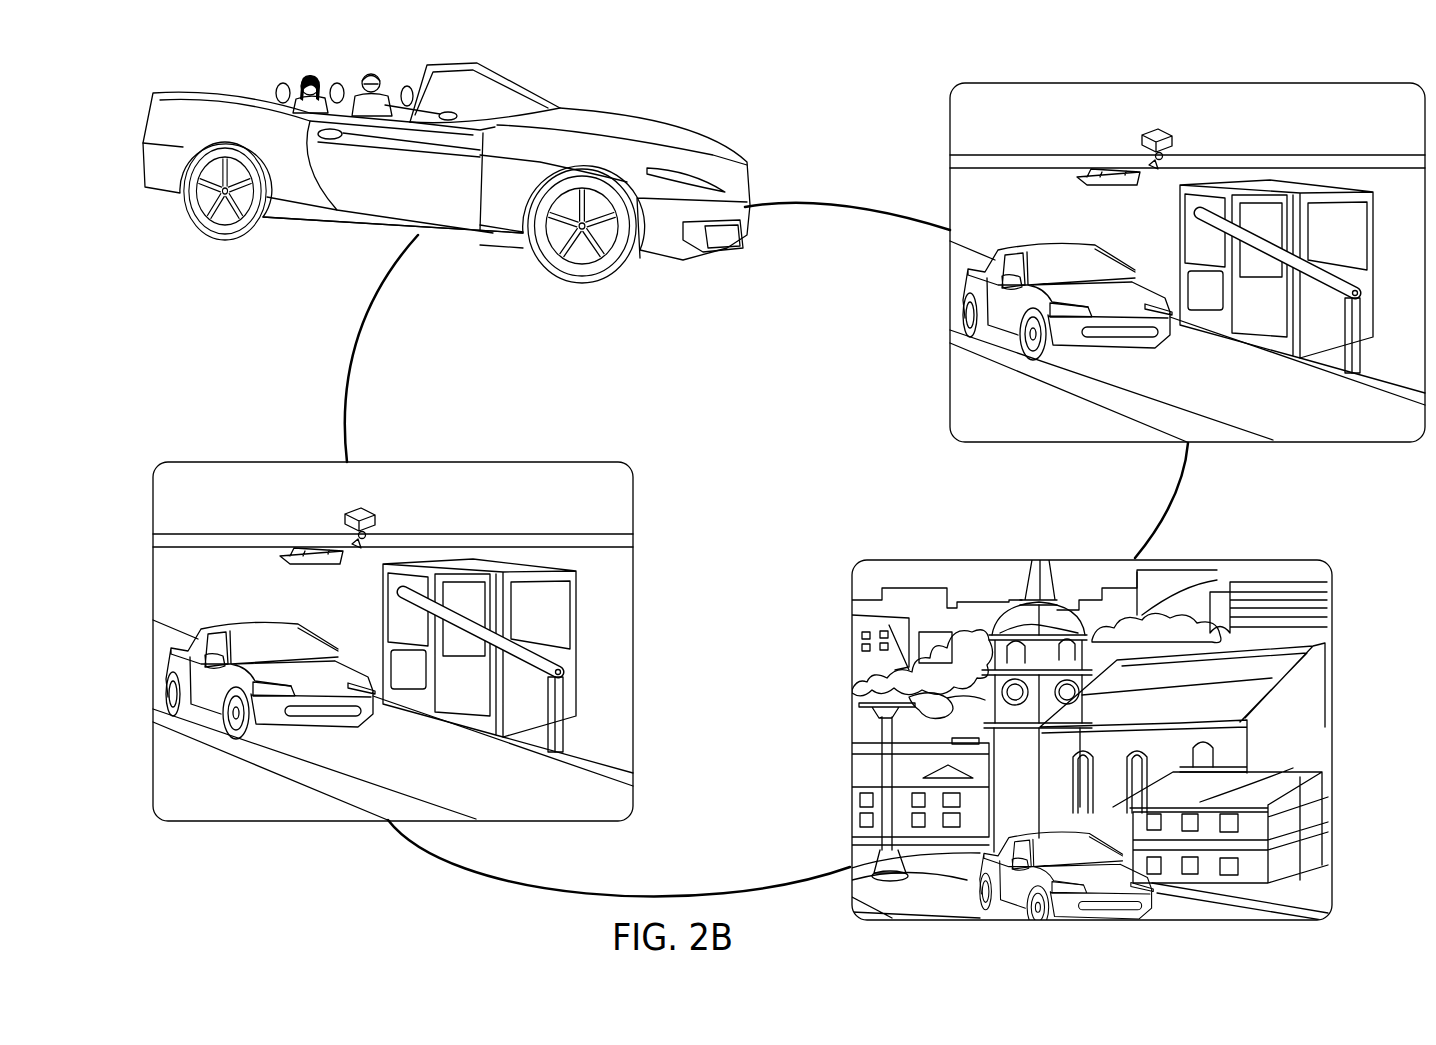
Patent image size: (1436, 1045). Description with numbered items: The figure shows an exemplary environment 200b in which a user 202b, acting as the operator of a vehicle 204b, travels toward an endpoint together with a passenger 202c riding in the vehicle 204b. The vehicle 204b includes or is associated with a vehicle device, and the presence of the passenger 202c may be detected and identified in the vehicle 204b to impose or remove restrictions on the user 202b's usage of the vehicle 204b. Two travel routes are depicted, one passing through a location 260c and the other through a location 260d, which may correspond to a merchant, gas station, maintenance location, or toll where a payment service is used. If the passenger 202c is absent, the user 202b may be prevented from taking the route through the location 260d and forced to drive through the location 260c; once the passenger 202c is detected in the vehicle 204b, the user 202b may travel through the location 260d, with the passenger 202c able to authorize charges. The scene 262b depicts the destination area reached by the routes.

The vehicle 204b is at (224, 71).
The passenger 202c is at (308, 72).
The user 202b is at (393, 55).
The environment 200b is at (875, 62).
The location 260d is at (1074, 98).
The location 260c is at (246, 476).
The city scene image 262b is at (974, 574).